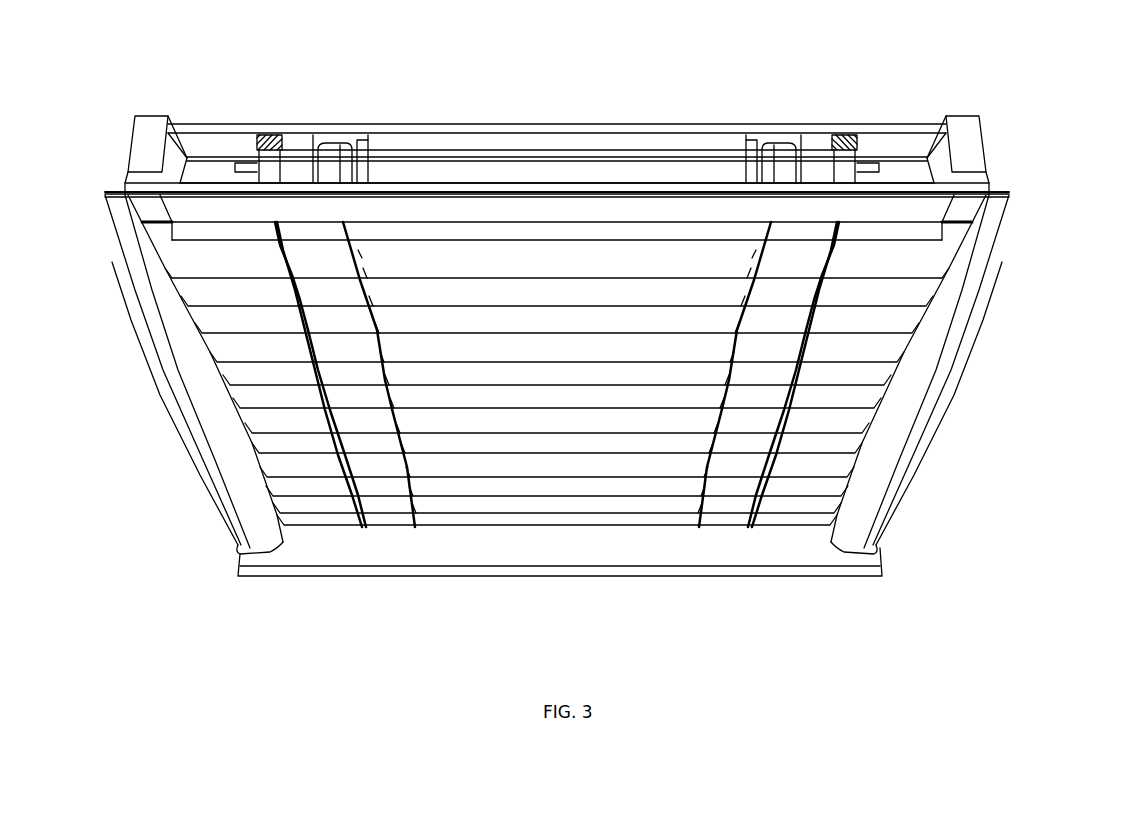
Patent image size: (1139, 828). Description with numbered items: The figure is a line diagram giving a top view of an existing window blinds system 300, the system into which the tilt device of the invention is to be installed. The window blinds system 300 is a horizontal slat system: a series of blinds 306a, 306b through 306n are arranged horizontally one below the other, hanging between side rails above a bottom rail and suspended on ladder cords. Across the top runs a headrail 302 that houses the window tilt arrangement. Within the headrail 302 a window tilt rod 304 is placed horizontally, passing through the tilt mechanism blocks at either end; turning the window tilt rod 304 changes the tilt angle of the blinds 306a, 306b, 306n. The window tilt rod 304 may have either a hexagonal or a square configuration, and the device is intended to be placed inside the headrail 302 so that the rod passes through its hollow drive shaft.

The window blinds system 300 is at (645, 83).
The headrail 302 is at (211, 124).
The window tilt rod 304 is at (441, 156).
The blind 306a is at (943, 268).
The blind 306b is at (928, 307).
The blind 306n is at (900, 347).